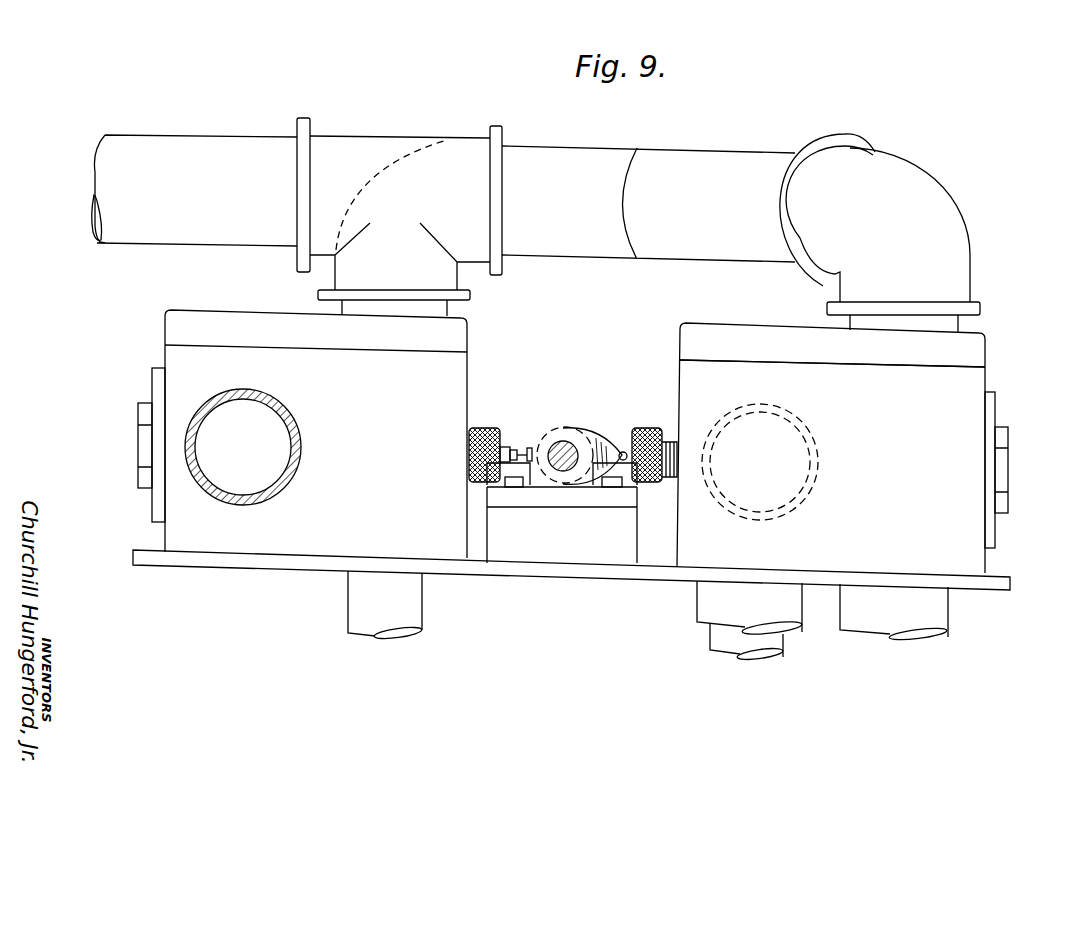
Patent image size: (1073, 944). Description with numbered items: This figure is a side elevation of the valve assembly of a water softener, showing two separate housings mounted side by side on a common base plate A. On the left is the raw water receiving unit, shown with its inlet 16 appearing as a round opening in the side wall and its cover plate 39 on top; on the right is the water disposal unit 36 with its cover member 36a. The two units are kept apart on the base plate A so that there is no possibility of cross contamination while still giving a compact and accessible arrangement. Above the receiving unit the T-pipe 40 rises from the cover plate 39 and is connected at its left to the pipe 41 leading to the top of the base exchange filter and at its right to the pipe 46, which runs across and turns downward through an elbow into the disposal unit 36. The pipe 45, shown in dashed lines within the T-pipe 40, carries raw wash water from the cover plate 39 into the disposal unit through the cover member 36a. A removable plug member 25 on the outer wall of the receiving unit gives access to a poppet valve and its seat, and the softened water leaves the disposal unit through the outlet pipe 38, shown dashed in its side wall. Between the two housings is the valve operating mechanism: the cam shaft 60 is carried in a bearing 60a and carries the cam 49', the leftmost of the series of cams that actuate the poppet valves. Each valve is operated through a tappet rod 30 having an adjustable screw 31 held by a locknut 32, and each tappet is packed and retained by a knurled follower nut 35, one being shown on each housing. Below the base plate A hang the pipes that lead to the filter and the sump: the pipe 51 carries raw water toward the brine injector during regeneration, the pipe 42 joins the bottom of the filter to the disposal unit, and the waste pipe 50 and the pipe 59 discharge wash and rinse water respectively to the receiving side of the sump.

The pipe 41 is at (95, 162).
The T-pipe 40 is at (400, 226).
The pipe 45 is at (399, 153).
The pipe 46 is at (648, 204).
The cover plate 39 is at (316, 434).
The inlet 16 is at (208, 402).
The removable plug member 25 is at (138, 438).
The knurled follower nut 35 is at (492, 428).
The tappet rod 30 is at (507, 447).
The locknut 32 is at (514, 450).
The screw 31 is at (530, 447).
The cam shaft 60 is at (563, 441).
The bearings 60a is at (573, 427).
The cam 49' is at (592, 442).
The water disposal unit 36 is at (842, 448).
The cover member 36a is at (832, 353).
The outlet pipe 38 is at (806, 408).
The base plate A is at (470, 567).
The pipe 51 is at (413, 609).
The waste pipe 50 is at (697, 594).
The pipe 59 is at (725, 639).
The pipe 42 is at (940, 611).